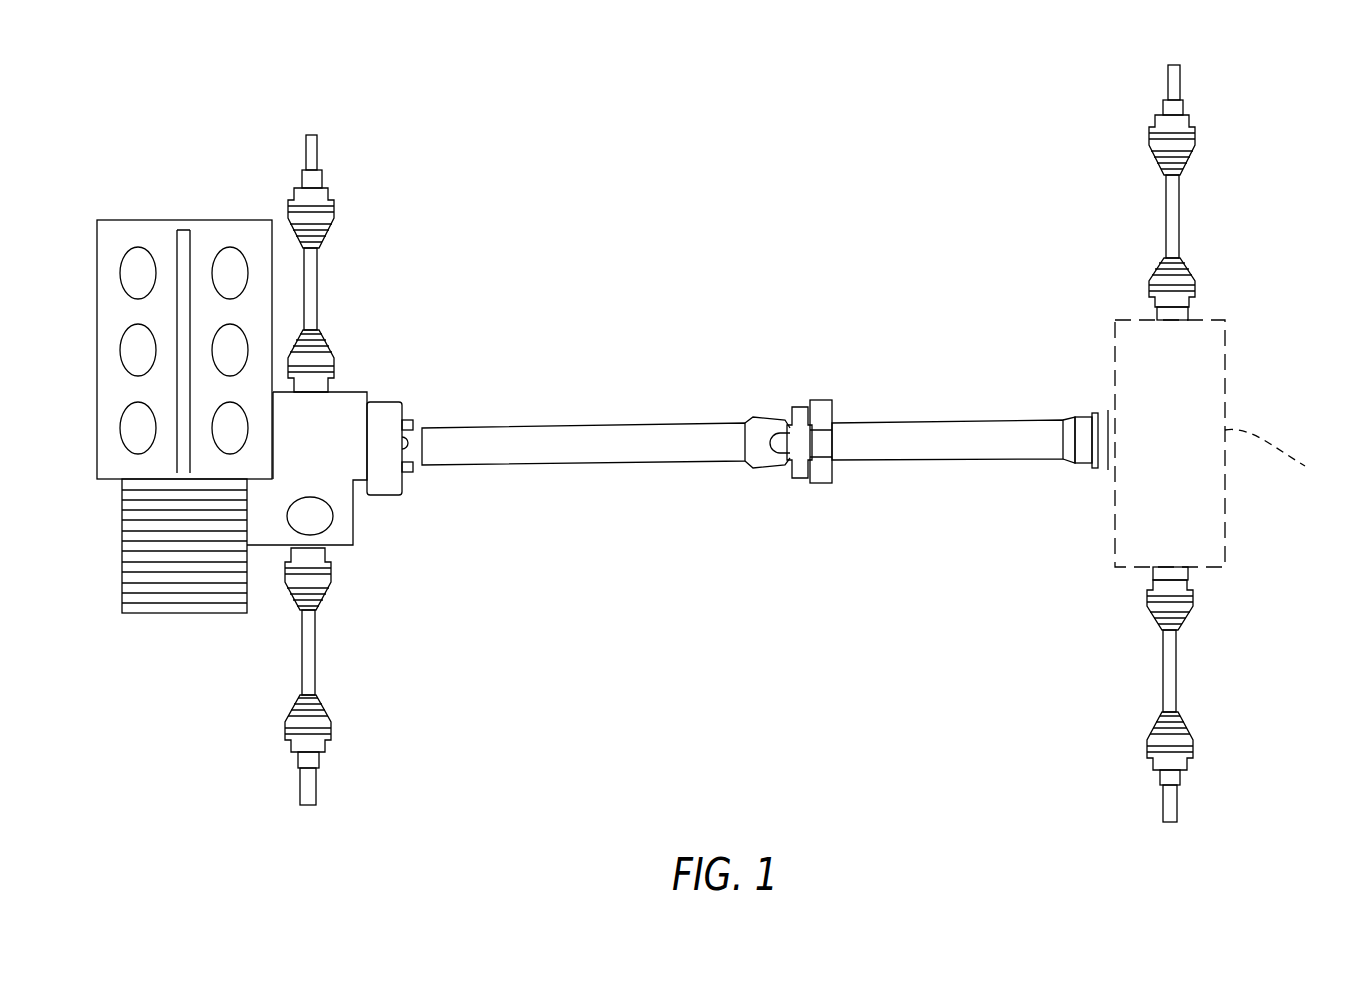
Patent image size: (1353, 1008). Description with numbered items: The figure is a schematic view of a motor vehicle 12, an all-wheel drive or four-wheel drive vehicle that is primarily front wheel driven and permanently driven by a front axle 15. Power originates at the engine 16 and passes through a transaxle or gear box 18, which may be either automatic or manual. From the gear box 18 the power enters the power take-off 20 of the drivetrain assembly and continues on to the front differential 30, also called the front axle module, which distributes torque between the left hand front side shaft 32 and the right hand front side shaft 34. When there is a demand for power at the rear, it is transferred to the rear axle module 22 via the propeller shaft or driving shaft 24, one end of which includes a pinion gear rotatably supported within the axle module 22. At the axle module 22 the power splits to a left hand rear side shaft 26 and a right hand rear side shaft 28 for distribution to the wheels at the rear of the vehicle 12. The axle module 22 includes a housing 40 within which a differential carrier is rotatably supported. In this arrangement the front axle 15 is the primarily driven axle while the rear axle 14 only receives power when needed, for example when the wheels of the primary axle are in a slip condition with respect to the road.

The motor vehicle 12 is at (275, 178).
The rear axle 14 is at (1195, 310).
The front axle 15 is at (328, 336).
The engine 16 is at (127, 232).
The gear box 18 is at (173, 583).
The power take-off 20 is at (343, 413).
The axle module 22 is at (1197, 386).
The propeller shaft 24 is at (667, 433).
The left hand rear side shaft 26 is at (1172, 192).
The right hand rear side shaft 28 is at (1172, 667).
The front differential 30 is at (321, 515).
The left hand front side shaft 32 is at (312, 263).
The right hand front side shaft 34 is at (310, 672).
The housing 40 is at (1283, 456).